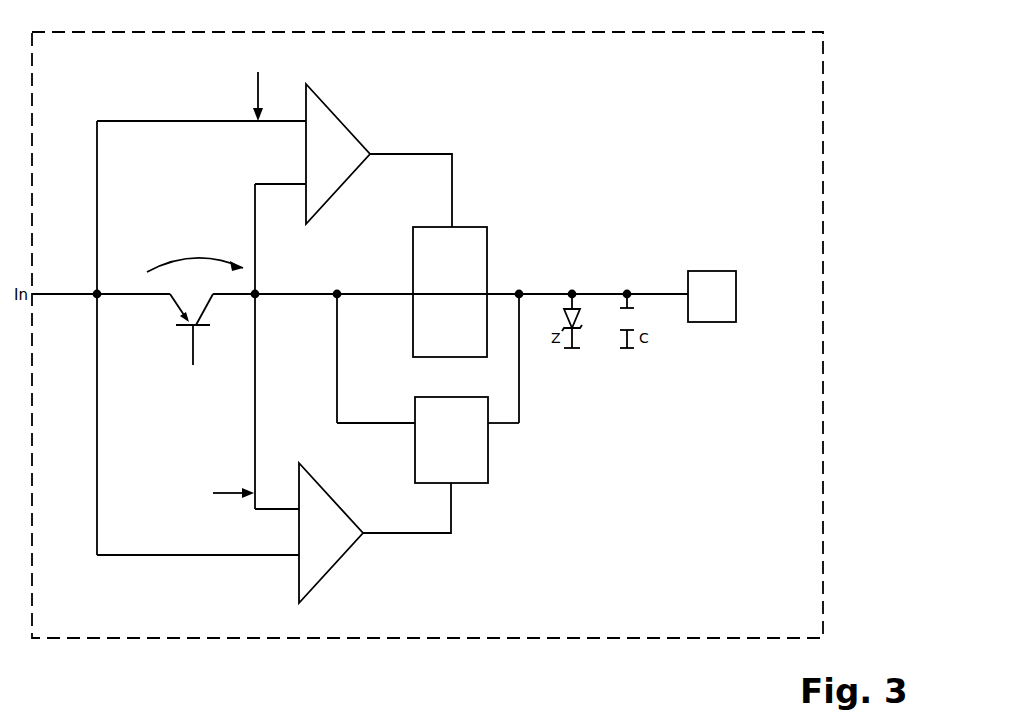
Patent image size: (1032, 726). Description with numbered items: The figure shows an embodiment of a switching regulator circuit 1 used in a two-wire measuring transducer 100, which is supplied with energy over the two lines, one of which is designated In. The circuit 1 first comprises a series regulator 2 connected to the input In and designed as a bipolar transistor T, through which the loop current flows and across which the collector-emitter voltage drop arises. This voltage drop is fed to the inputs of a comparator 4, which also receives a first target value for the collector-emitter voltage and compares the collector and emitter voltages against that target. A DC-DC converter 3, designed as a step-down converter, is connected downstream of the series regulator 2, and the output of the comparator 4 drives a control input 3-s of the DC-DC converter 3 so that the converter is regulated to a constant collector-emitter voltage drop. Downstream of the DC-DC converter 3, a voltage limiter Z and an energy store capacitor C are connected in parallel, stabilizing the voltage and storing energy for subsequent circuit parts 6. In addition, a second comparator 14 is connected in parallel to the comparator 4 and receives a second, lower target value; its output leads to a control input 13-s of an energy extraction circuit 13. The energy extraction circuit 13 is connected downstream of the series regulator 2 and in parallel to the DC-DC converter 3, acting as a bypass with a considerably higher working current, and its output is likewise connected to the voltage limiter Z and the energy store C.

The measuring transducer 100 is at (838, 182).
The switching regulator circuit 1 is at (685, 119).
The series regulator 2 is at (162, 347).
The DC-DC converter 3 is at (547, 208).
The control input 3-s is at (449, 243).
The comparator 4 is at (405, 58).
The subsequent circuit parts 6 is at (746, 348).
The energy extraction circuit 13 is at (585, 465).
The control input of the energy extraction circuit 13-s is at (451, 471).
The second comparator 14 is at (433, 595).